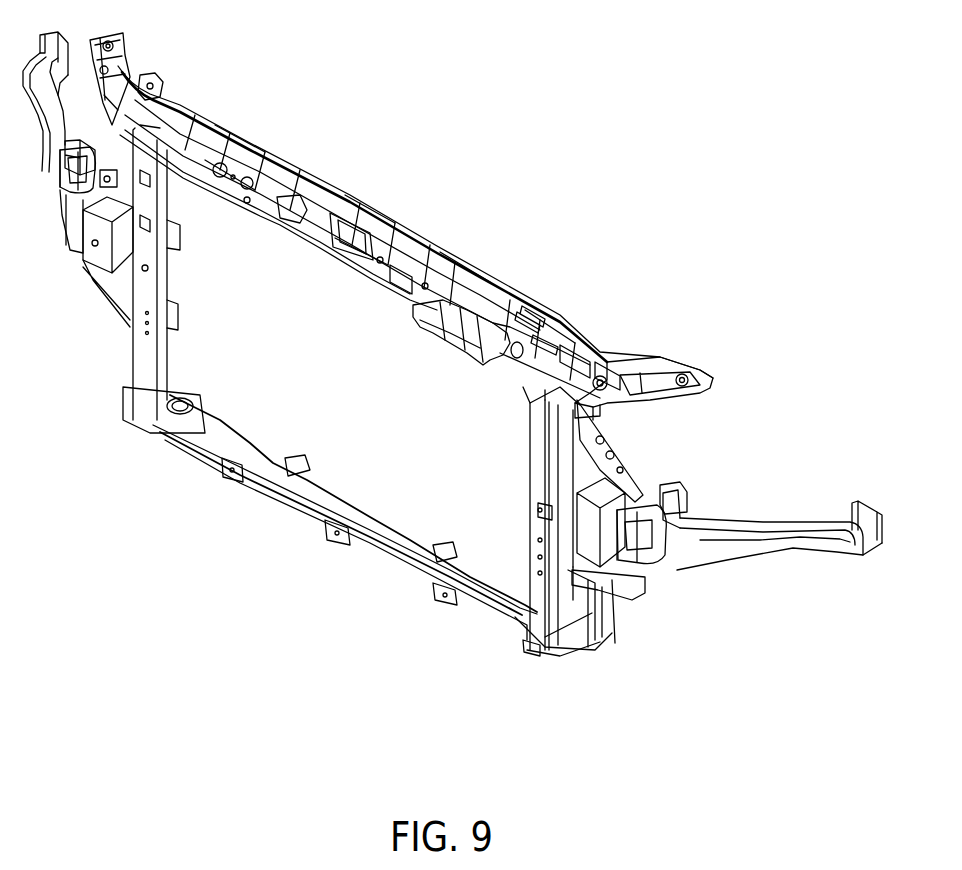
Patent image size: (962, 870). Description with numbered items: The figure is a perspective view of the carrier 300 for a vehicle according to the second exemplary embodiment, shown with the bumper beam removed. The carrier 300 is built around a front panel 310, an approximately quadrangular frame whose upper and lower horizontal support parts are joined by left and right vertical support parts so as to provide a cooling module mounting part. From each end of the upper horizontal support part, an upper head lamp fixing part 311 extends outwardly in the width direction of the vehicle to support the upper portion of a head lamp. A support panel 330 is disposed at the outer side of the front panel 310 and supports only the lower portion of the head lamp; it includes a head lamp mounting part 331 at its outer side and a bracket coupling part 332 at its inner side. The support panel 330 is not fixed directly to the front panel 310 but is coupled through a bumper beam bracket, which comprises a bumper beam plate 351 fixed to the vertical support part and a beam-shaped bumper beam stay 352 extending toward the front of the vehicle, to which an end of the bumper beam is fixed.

The carrier 300 is at (437, 190).
The front panel 310 is at (305, 165).
The upper head lamp fixing part 311 is at (677, 367).
The support panel 330 is at (790, 648).
The head lamp mounting part 331 is at (745, 562).
The bracket coupling part 332 is at (657, 572).
The bumper beam plate 351 is at (632, 590).
The bumper beam stay 352 is at (560, 658).